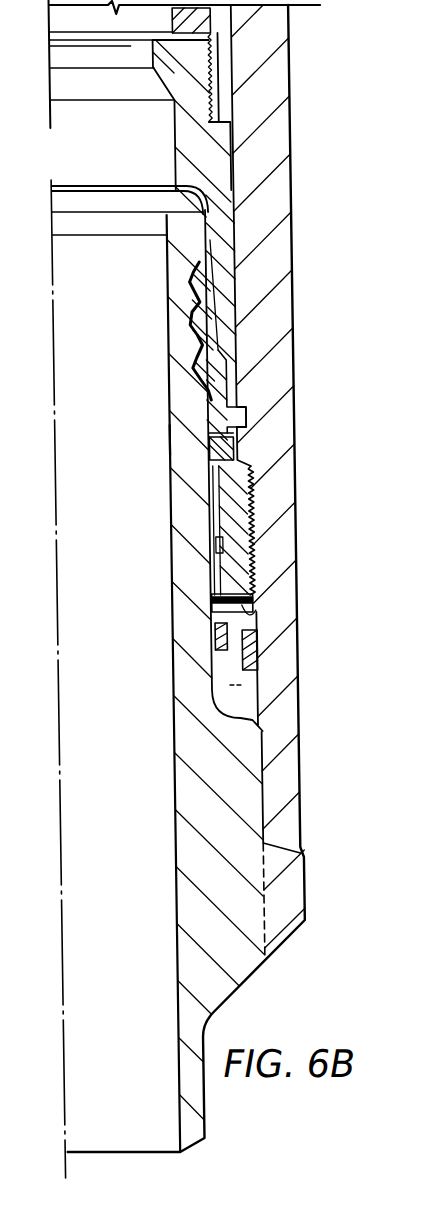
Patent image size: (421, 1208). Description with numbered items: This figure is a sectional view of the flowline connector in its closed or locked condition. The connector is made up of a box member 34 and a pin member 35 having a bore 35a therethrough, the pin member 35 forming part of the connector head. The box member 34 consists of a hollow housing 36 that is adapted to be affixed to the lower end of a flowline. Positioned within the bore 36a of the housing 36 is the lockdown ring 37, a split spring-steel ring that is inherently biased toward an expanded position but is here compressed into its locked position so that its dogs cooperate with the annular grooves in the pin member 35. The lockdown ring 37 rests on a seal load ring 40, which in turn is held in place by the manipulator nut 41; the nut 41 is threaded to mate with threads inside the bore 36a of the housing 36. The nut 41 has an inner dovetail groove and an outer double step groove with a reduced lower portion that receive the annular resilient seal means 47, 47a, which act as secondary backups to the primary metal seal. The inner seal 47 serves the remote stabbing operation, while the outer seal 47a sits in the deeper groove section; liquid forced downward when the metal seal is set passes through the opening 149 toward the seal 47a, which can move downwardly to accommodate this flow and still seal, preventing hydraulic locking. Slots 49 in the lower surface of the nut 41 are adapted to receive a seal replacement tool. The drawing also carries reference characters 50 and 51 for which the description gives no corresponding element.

The box member 34 is at (297, 308).
The pin member 35 is at (169, 258).
The bore 35a is at (163, 440).
The hollow housing 36 is at (281, 78).
The bore 36a is at (252, 793).
The lockdown ring 37 is at (232, 380).
The seal load ring 40 is at (230, 444).
The manipulator nut 41 is at (235, 552).
The resilient seal means 47 is at (206, 640).
The resilient seal means 47a is at (248, 650).
The slots 49 is at (240, 697).
The screw 50 is at (207, 102).
The lock ring 51 is at (232, 343).
The opening 149 is at (244, 612).